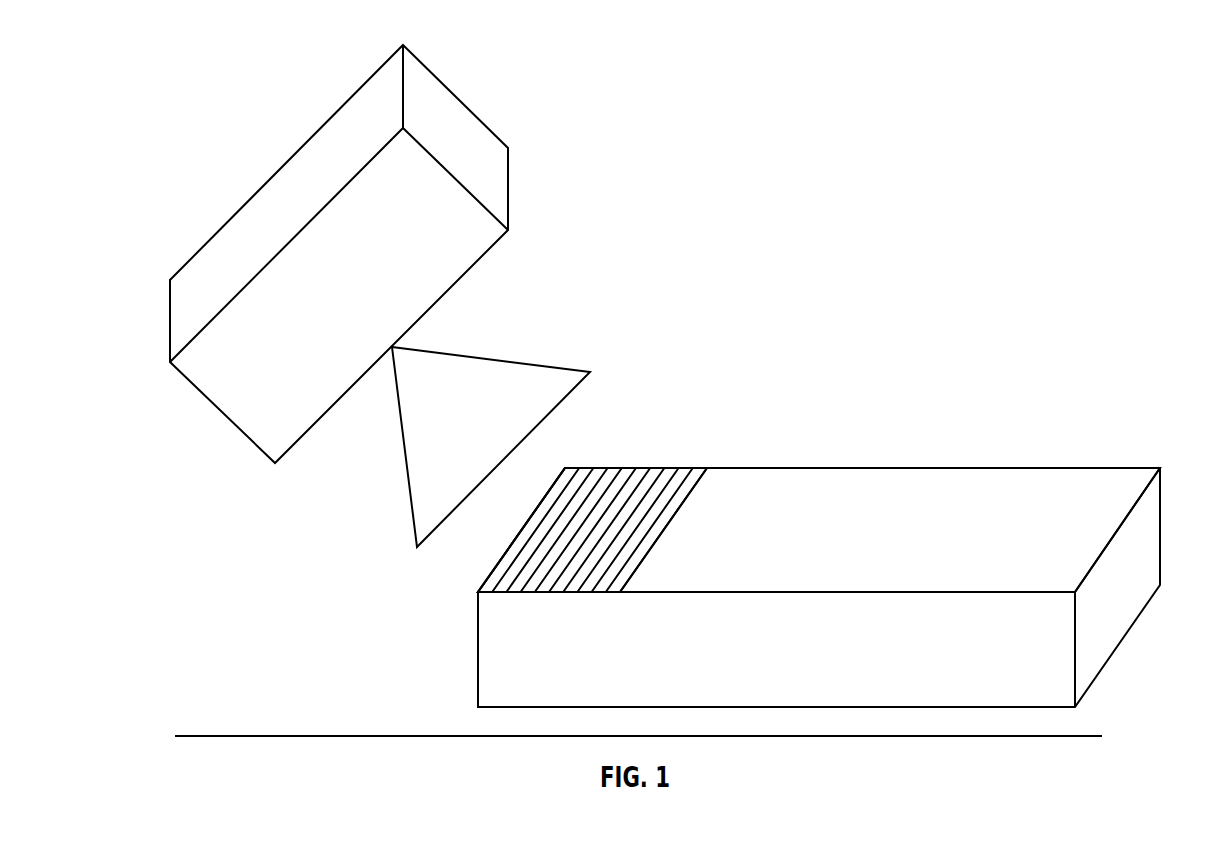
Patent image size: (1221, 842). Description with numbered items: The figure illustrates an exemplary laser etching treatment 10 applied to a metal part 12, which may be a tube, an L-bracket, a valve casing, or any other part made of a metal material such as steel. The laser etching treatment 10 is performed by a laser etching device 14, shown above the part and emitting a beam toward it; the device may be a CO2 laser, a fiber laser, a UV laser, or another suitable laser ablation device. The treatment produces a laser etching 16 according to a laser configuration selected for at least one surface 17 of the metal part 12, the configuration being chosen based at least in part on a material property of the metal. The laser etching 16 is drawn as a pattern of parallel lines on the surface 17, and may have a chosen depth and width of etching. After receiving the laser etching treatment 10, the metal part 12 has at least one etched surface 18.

The laser etching treatment 10 is at (1081, 63).
The metal part 12 is at (1138, 552).
The laser etching device 14 is at (222, 414).
The laser etching 16 is at (562, 515).
The surface 17 is at (1027, 487).
The etched surface 18 is at (532, 548).